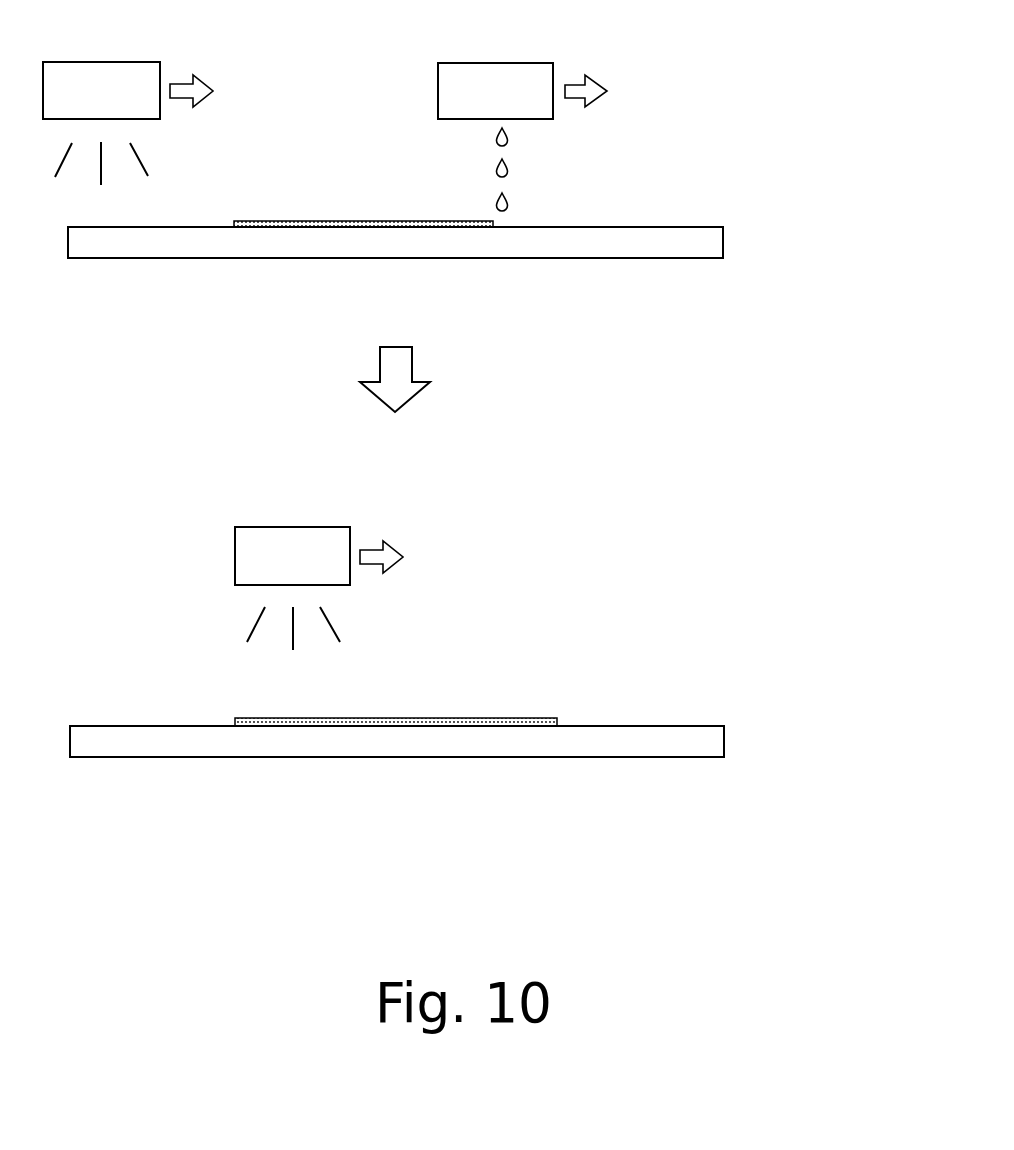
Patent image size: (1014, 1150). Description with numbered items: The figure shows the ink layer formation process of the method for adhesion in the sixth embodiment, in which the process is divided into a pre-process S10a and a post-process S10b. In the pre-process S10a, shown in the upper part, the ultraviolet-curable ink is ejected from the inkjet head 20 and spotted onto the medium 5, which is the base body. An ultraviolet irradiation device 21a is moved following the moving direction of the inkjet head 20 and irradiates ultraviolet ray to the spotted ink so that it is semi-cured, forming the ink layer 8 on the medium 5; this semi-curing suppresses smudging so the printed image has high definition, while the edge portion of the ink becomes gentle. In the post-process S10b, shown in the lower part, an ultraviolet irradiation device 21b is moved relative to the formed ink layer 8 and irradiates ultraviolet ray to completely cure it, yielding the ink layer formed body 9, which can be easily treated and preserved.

The ultraviolet irradiation device 21a is at (110, 62).
The inkjet head 20 is at (502, 63).
The ink layer 8 is at (233, 224).
The medium 5 is at (725, 242).
The pre-process S10a is at (773, 180).
The ultraviolet irradiation device 21b is at (300, 527).
The post-process S10b is at (777, 618).
The ink layer formed body 9 is at (737, 733).